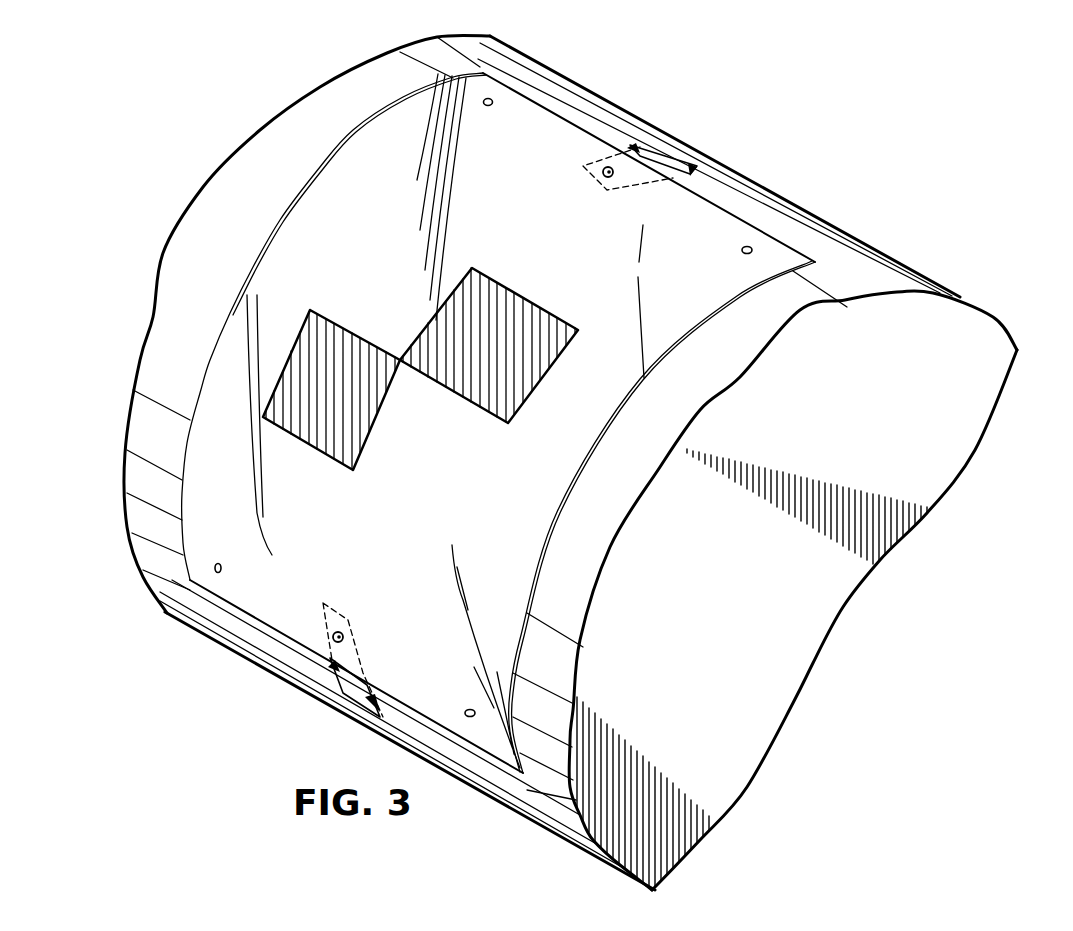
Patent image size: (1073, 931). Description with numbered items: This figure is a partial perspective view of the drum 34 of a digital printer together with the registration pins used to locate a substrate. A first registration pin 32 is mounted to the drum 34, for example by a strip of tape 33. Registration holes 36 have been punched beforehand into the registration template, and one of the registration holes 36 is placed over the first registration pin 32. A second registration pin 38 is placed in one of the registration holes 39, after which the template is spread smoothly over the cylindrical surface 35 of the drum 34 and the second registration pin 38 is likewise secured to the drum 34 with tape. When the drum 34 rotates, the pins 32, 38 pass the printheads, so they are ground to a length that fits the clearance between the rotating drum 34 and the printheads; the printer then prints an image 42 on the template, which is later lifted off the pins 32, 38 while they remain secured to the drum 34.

The first registration pin 32 is at (611, 179).
The strip of tape 33 is at (682, 180).
The drum 34 is at (1005, 326).
The cylindrical surface 35 is at (850, 257).
The registration holes 36 is at (484, 107).
The second registration pin 38 is at (338, 632).
The registration holes 39 is at (223, 568).
The image 42 is at (545, 377).